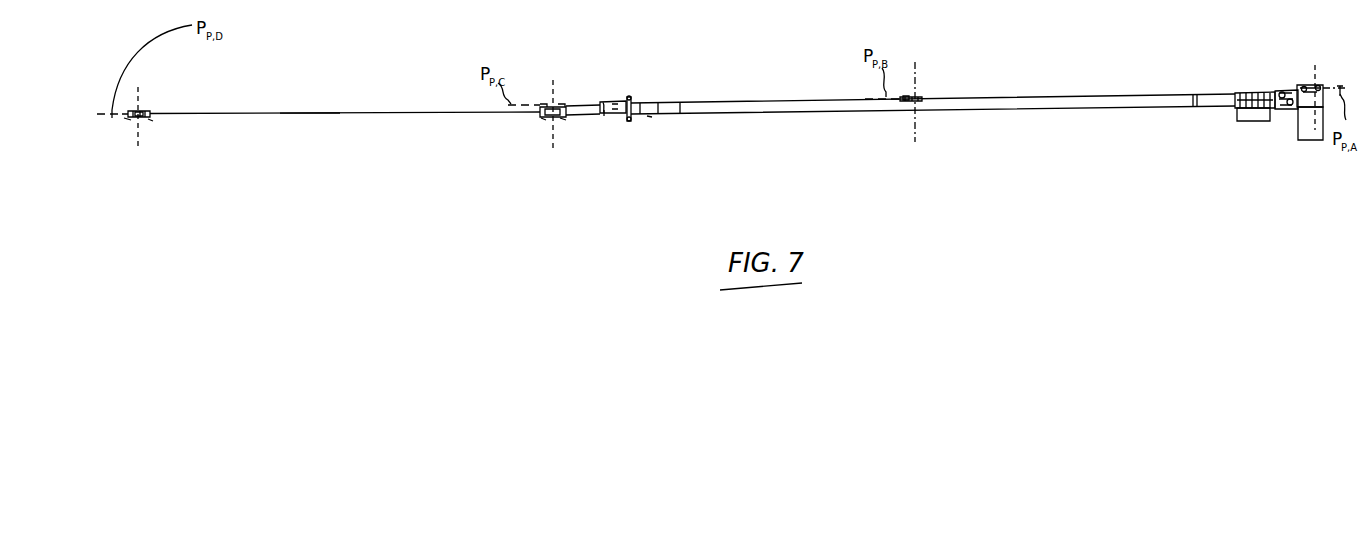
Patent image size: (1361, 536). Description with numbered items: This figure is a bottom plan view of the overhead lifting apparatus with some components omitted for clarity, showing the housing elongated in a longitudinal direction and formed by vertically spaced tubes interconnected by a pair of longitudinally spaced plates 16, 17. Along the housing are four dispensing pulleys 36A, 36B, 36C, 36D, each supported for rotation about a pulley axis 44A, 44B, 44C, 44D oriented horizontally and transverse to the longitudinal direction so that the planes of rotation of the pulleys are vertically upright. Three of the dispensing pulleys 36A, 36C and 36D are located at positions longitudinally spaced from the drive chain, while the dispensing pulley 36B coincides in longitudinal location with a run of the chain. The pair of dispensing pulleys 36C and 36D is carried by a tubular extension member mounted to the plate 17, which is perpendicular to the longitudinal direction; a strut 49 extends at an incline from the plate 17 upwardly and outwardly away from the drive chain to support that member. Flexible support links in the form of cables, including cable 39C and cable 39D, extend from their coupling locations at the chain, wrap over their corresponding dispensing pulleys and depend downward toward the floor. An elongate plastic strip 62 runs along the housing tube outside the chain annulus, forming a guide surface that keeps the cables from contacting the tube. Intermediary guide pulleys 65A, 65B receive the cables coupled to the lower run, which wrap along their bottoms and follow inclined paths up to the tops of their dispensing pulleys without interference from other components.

The plate 16 is at (1237, 115).
The plate 17 is at (630, 120).
The dispensing pulley 36A is at (1305, 89).
The dispensing pulley 36B is at (920, 96).
The dispensing pulley 36C is at (559, 103).
The dispensing pulley 36D is at (148, 110).
The flexible support link 39C is at (597, 103).
The flexible support link 39D is at (308, 118).
The pulley axis 44A is at (1310, 124).
The pulley axis 44B is at (916, 68).
The pulley axis 44C is at (550, 85).
The pulley axis 44D is at (140, 87).
The strut 49 is at (605, 112).
The elongate plastic strip 62 is at (771, 111).
The intermediary guide pulley 65A is at (1265, 92).
The intermediary guide pulley 65B is at (1288, 101).